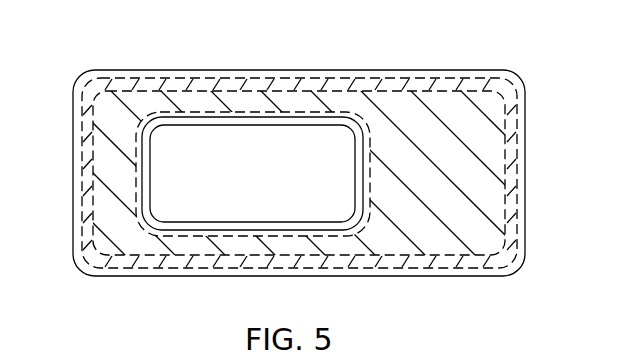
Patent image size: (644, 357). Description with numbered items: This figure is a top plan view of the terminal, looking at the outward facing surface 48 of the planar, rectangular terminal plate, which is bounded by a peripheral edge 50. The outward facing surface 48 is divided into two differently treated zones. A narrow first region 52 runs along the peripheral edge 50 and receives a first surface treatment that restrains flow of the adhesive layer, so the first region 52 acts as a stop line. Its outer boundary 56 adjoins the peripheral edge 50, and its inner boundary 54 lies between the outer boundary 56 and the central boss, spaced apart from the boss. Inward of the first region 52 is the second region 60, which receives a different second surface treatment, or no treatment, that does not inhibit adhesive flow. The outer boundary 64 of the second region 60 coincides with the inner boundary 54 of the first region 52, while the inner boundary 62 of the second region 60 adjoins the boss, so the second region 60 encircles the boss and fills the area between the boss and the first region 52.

The outward facing surface 48 is at (138, 55).
The peripheral edge 50 is at (73, 196).
The first region 52 is at (512, 268).
The inner boundary 54 is at (293, 68).
The outer boundary 56 is at (476, 75).
The second region 60 is at (427, 238).
The inner boundary 62 is at (203, 82).
The outer boundary 64 is at (271, 121).